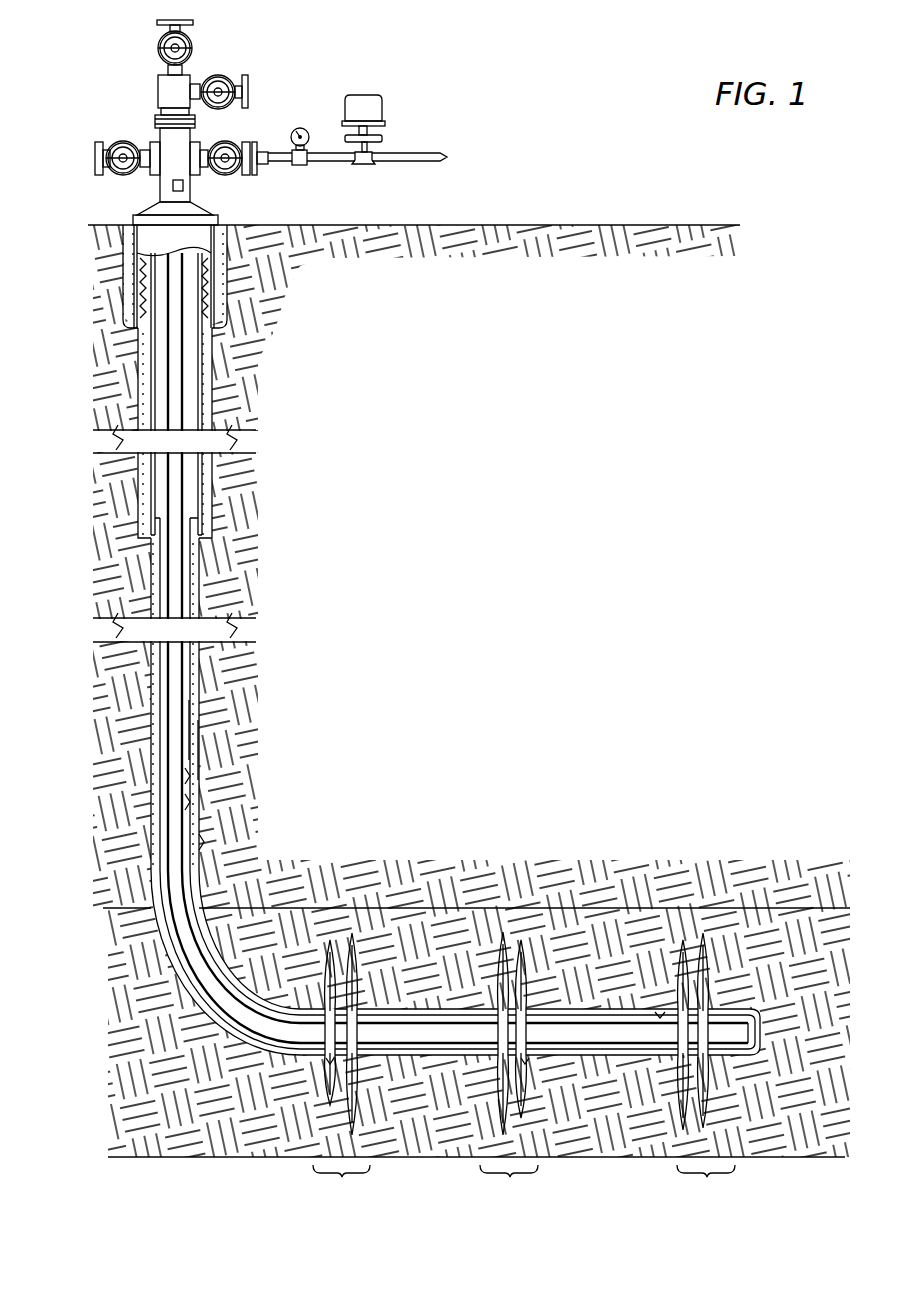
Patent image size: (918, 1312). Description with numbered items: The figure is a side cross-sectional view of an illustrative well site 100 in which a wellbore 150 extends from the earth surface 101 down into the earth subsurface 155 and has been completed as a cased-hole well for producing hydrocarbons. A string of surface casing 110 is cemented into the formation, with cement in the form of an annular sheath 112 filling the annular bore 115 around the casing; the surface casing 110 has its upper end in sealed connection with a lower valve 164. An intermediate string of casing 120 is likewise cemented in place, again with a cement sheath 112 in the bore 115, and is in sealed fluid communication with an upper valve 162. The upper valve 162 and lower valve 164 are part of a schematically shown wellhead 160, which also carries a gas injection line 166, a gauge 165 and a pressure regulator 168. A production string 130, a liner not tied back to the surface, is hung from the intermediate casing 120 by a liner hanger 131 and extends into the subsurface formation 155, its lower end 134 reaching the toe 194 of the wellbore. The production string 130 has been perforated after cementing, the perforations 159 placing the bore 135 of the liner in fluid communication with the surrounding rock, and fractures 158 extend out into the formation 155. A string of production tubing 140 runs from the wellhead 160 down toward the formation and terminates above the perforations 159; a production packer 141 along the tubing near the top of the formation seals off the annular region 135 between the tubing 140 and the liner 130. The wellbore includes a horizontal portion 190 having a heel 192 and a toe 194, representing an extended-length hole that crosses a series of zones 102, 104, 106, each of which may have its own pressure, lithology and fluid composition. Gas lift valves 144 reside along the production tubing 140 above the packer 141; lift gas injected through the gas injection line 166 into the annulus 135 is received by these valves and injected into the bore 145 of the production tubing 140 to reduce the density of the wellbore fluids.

The well site 100 is at (598, 60).
The earth surface 101 is at (653, 225).
The zone 102 is at (341, 1186).
The zone 104 is at (509, 1186).
The zone 106 is at (706, 1185).
The surface casing 110 is at (230, 262).
The cement sheath 112 is at (212, 325).
The annular bore 115 is at (212, 380).
The intermediate string of casing 120 is at (207, 355).
The production string 130 is at (192, 740).
The liner hanger 131 is at (208, 512).
The lower end 134 is at (722, 975).
The bore of the liner 135 is at (182, 721).
The production tubing 140 is at (183, 417).
The production packer 141 is at (252, 1016).
The gas lift valves 144 is at (202, 840).
The bore of the production tubing 145 is at (175, 580).
The wellbore 150 is at (464, 450).
The earth subsurface 155 is at (812, 1105).
The fractures 158 is at (527, 1003).
The perforations 159 is at (657, 1015).
The wellhead 160 is at (337, 58).
The upper valve 162 is at (158, 87).
The lower valve 164 is at (158, 143).
The gauge 165 is at (300, 128).
The gas injection line 166 is at (397, 153).
The pressure regulator 168 is at (367, 95).
The horizontal portion 190 is at (706, 785).
The heel 192 is at (258, 1050).
The toe 194 is at (753, 912).